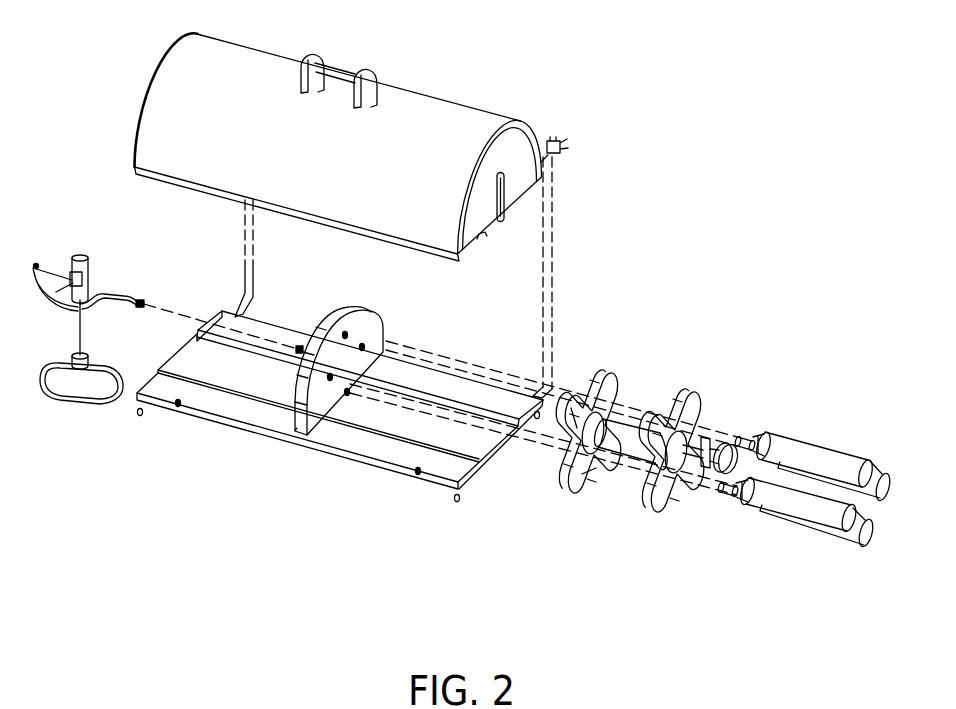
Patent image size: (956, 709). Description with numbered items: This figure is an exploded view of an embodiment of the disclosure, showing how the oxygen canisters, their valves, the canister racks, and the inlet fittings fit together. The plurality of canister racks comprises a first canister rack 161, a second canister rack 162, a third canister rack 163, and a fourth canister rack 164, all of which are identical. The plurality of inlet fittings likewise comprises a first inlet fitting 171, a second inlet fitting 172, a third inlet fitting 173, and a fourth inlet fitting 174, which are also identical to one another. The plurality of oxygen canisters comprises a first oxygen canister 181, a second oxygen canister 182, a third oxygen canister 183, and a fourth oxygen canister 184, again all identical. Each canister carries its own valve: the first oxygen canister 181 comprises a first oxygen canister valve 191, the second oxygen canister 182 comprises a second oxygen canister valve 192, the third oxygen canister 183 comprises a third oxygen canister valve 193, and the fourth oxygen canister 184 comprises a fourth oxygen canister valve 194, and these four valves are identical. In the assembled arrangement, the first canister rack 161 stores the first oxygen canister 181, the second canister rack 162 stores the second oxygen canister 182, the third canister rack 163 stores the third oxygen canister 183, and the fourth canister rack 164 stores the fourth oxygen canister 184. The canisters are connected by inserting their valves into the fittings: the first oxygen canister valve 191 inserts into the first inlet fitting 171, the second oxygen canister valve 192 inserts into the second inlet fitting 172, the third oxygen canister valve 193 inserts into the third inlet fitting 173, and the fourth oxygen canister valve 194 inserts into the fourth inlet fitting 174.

The first canister rack 161 is at (588, 392).
The second canister rack 162 is at (617, 413).
The third canister rack 163 is at (608, 458).
The fourth canister rack 164 is at (565, 443).
The first inlet fitting 171 is at (357, 307).
The second inlet fitting 172 is at (363, 346).
The third inlet fitting 173 is at (348, 396).
The fourth inlet fitting 174 is at (329, 380).
The first oxygen canister 181 is at (868, 457).
The second oxygen canister 182 is at (885, 475).
The third oxygen canister 183 is at (870, 543).
The fourth oxygen canister 184 is at (849, 535).
The first oxygen canister valve 191 is at (741, 434).
The second oxygen canister valve 192 is at (758, 434).
The third oxygen canister valve 193 is at (738, 504).
The fourth oxygen canister valve 194 is at (723, 488).